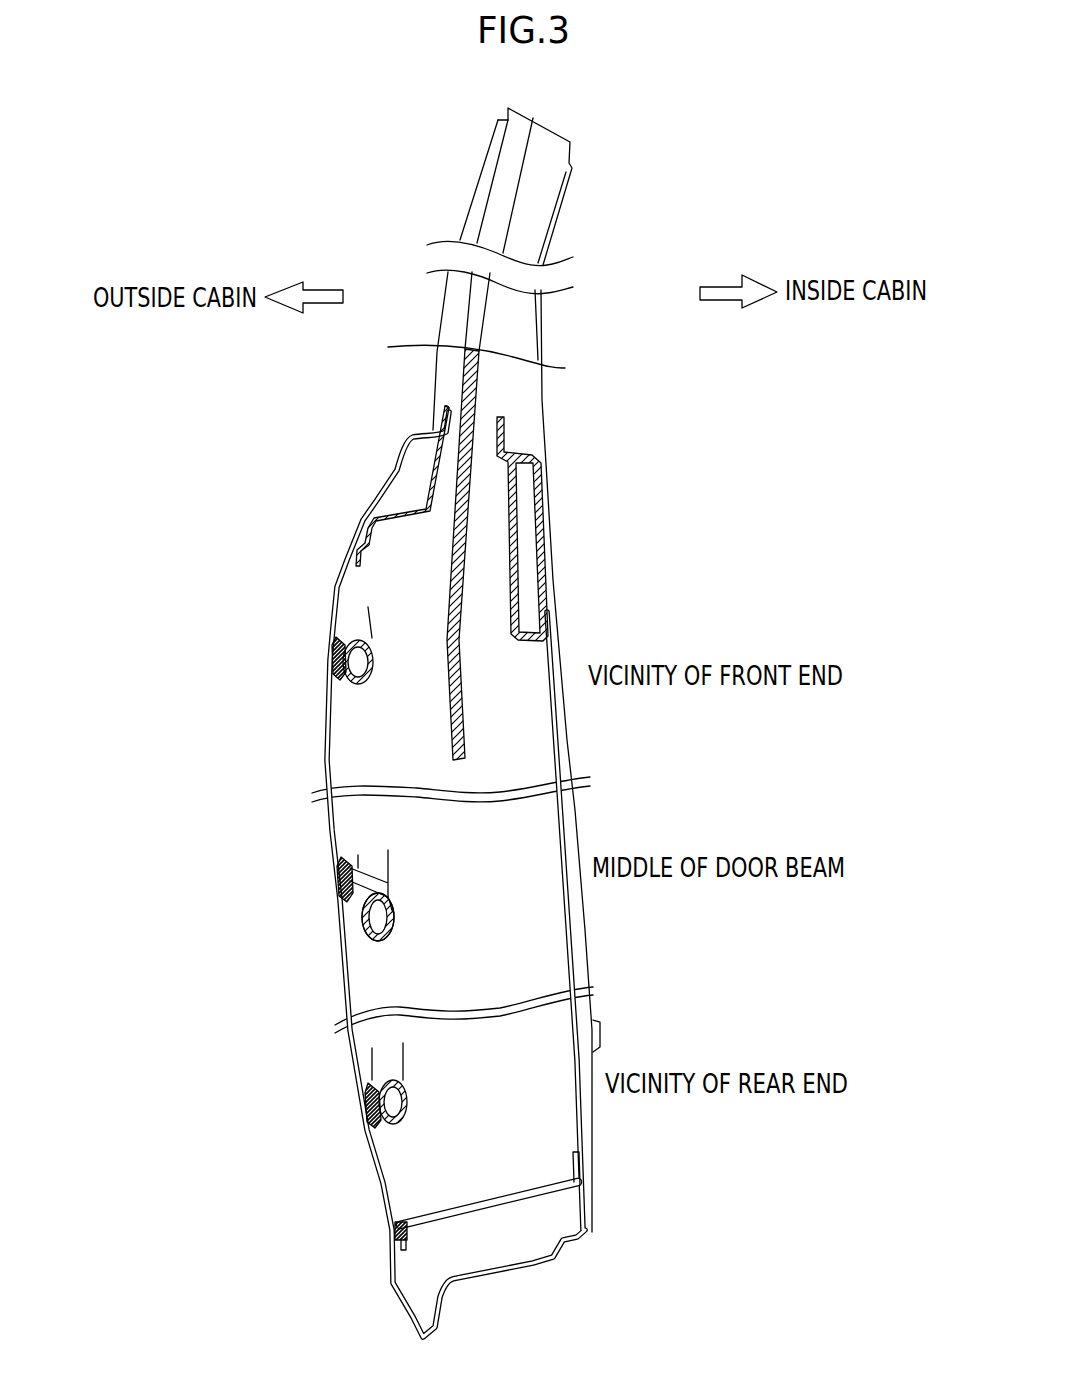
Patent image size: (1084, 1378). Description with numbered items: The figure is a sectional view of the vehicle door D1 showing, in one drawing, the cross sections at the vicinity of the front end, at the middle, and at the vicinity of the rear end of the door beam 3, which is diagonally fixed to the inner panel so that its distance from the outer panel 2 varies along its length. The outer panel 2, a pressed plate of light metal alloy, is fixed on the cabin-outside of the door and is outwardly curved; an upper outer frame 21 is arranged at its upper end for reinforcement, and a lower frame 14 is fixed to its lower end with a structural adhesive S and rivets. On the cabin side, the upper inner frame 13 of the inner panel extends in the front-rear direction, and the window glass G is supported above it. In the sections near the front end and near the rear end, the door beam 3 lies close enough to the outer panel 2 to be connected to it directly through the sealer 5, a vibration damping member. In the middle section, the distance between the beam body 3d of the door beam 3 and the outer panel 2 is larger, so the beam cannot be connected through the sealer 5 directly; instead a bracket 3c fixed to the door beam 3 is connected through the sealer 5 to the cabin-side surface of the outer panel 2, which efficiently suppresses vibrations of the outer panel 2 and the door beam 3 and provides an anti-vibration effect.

The vehicle door D1 is at (643, 208).
The outer panel 2 is at (372, 500).
The upper outer frame 21 is at (433, 467).
The window glass G is at (477, 380).
The upper inner frame 13 is at (520, 608).
The door beam 3 is at (357, 638).
The bracket 3c is at (370, 882).
The beam body 3d is at (367, 933).
The sealer 5 is at (330, 658).
The lower frame 14 is at (473, 1212).
The structural adhesive S is at (398, 1230).